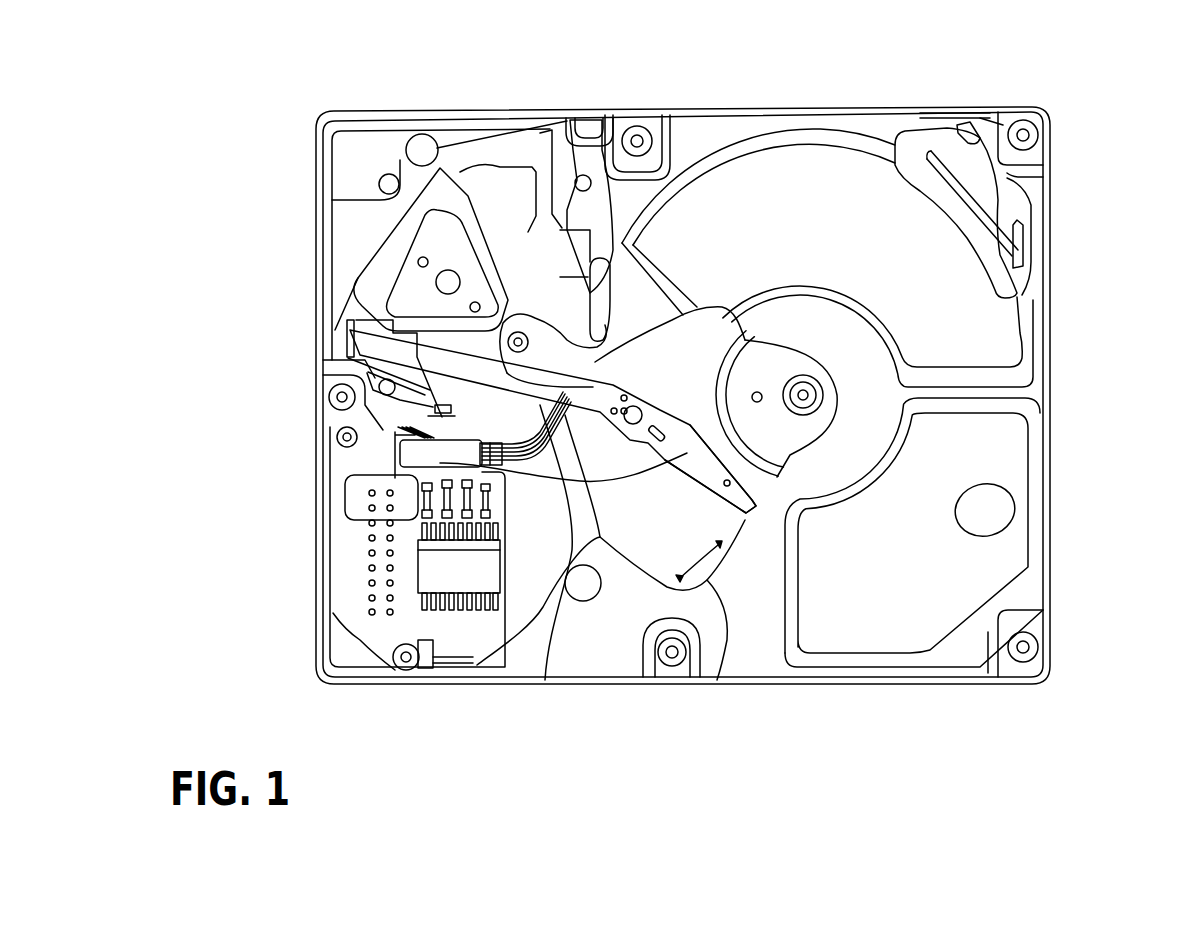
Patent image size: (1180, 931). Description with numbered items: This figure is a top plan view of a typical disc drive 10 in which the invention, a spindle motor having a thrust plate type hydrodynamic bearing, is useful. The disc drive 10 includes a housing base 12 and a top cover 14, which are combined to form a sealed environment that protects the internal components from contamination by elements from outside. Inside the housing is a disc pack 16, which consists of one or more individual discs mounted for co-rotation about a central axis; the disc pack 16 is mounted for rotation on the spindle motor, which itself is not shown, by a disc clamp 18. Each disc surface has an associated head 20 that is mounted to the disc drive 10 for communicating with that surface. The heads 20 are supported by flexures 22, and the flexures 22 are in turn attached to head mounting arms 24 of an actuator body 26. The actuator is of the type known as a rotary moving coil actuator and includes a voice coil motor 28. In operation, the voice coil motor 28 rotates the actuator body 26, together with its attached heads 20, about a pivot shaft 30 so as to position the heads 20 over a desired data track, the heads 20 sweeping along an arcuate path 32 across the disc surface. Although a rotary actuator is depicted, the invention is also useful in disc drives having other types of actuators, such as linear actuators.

The disc drive 10 is at (286, 114).
The housing base 12 is at (453, 688).
The top cover 14 is at (1043, 393).
The disc pack 16 is at (645, 545).
The disc clamp 18 is at (790, 435).
The head 20 is at (752, 507).
The flexure 22 is at (440, 463).
The head mounting arm 24 is at (353, 405).
The actuator body 26 is at (573, 313).
The voice coil motor 28 is at (500, 167).
The pivot shaft 30 is at (353, 323).
The arcuate path 32 is at (718, 578).